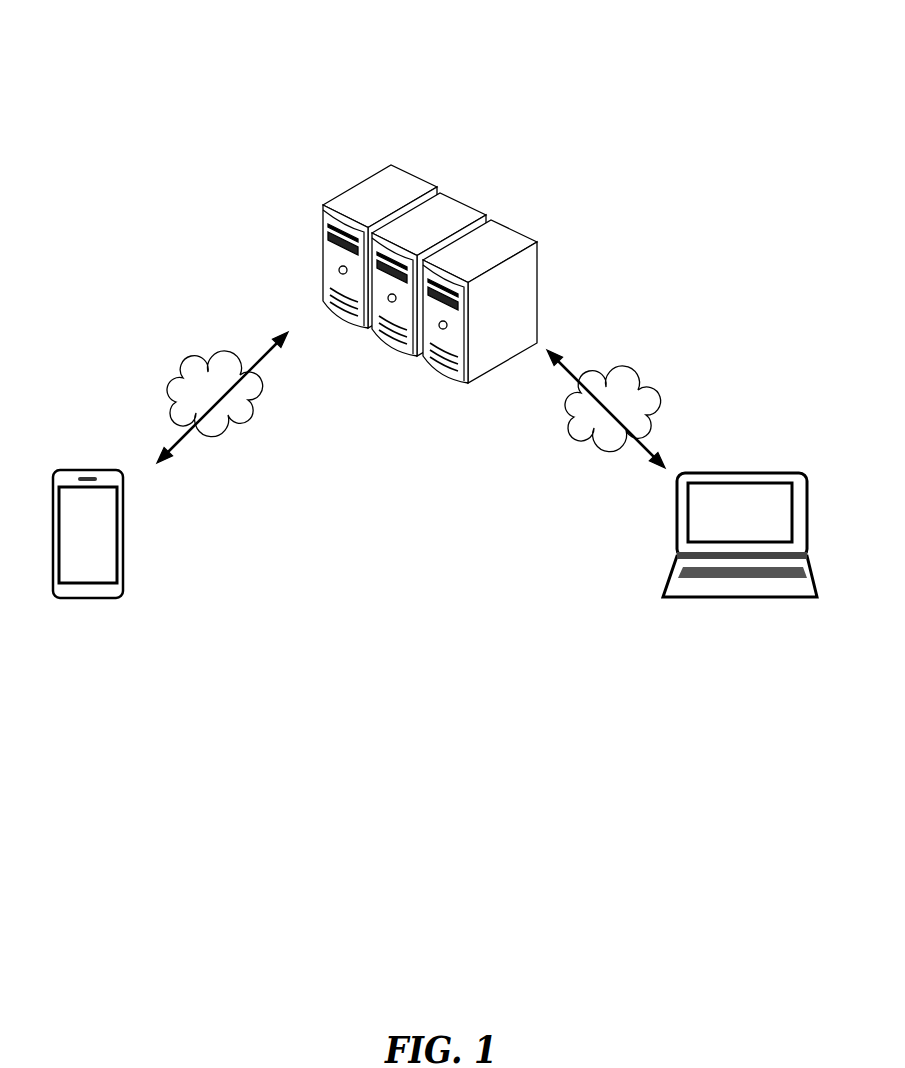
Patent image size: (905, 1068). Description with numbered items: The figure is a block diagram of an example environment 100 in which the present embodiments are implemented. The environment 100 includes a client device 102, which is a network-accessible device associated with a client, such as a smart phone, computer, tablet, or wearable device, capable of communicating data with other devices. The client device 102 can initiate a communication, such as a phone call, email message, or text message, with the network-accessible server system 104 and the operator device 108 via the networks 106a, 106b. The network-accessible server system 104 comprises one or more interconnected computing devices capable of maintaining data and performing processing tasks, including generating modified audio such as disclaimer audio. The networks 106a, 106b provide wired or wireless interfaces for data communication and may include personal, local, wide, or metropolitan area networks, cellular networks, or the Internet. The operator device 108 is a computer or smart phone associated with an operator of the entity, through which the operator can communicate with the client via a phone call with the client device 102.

The environment 100 is at (748, 63).
The client device 102 is at (82, 465).
The network-accessible server system 104 is at (537, 293).
The network 106a is at (238, 352).
The network 106b is at (640, 382).
The operator device 108 is at (787, 470).